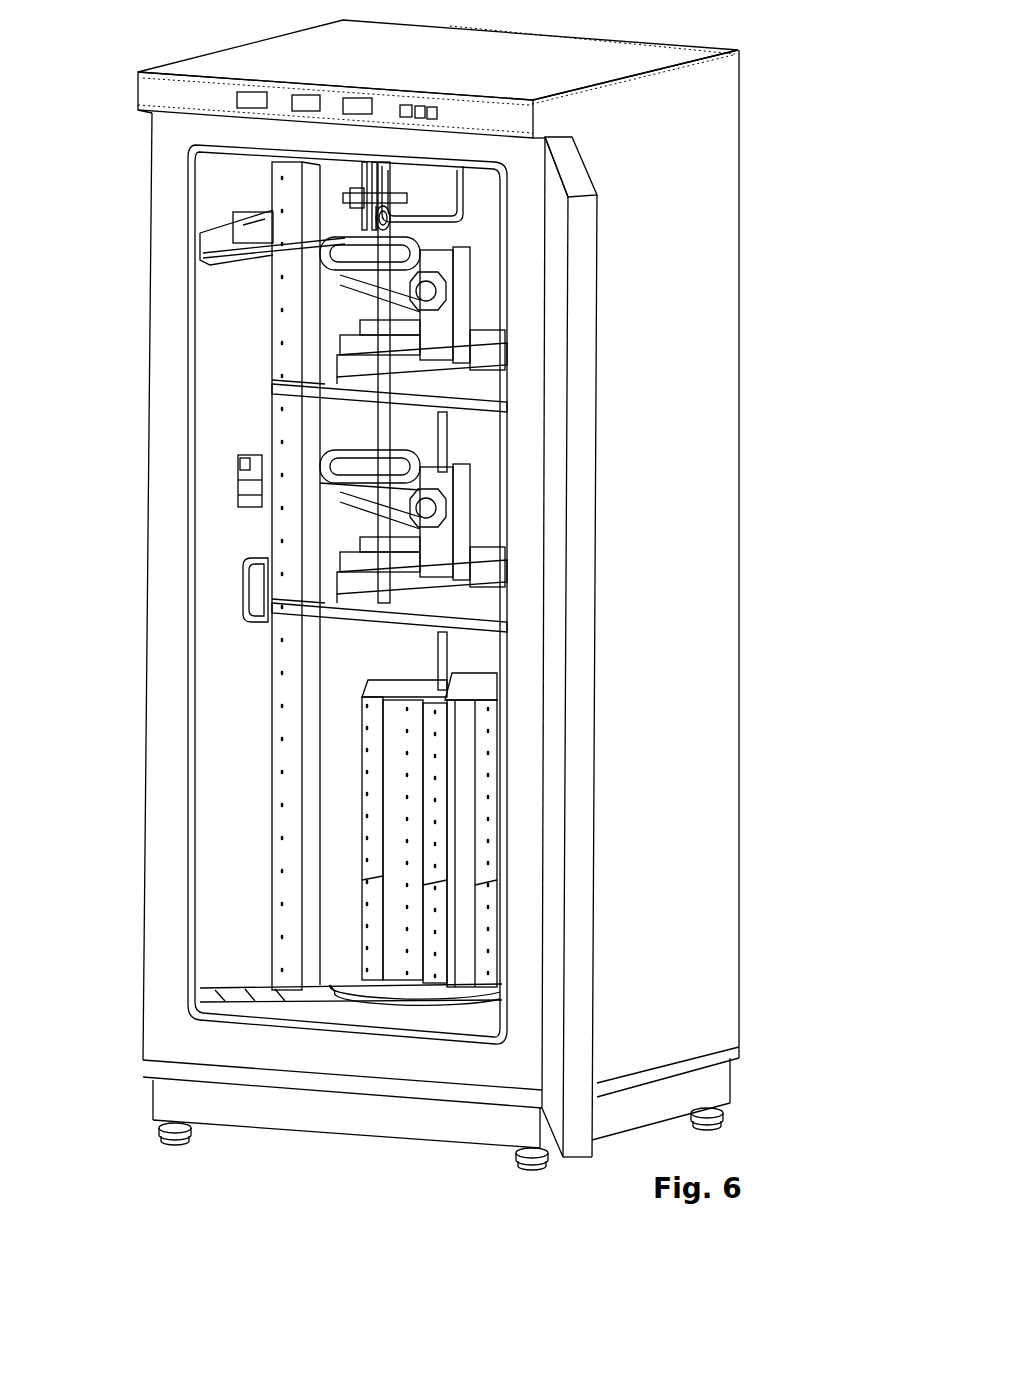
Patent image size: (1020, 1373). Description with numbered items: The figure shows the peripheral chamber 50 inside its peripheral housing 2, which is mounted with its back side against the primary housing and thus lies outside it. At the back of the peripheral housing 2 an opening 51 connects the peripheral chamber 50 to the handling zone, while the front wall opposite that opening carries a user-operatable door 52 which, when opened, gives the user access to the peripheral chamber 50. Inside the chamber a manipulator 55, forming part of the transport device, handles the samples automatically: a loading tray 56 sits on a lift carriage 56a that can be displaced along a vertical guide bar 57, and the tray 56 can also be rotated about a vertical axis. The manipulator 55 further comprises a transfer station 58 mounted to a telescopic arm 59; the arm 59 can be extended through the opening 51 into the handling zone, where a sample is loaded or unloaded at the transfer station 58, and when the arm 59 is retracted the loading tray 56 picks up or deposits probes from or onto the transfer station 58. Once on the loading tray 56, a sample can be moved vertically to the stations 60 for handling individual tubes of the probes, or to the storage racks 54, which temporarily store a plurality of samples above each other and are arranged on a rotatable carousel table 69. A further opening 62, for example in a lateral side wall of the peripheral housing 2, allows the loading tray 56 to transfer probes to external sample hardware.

The peripheral housing 2 is at (438, 586).
The peripheral chamber 50 is at (222, 865).
The opening 51 is at (478, 111).
The user-operatable door 52 is at (671, 647).
The storage rack 54 is at (352, 939).
The manipulator 55 is at (243, 390).
The loading tray 56 is at (239, 549).
The lift carriage 56a is at (170, 509).
The vertical guide bar 57 is at (206, 576).
The transfer station 58 is at (218, 294).
The telescopic arm 59 is at (310, 116).
The station 60 is at (566, 441).
The further opening 62 is at (180, 626).
The rotatable carousel table 69 is at (415, 1086).